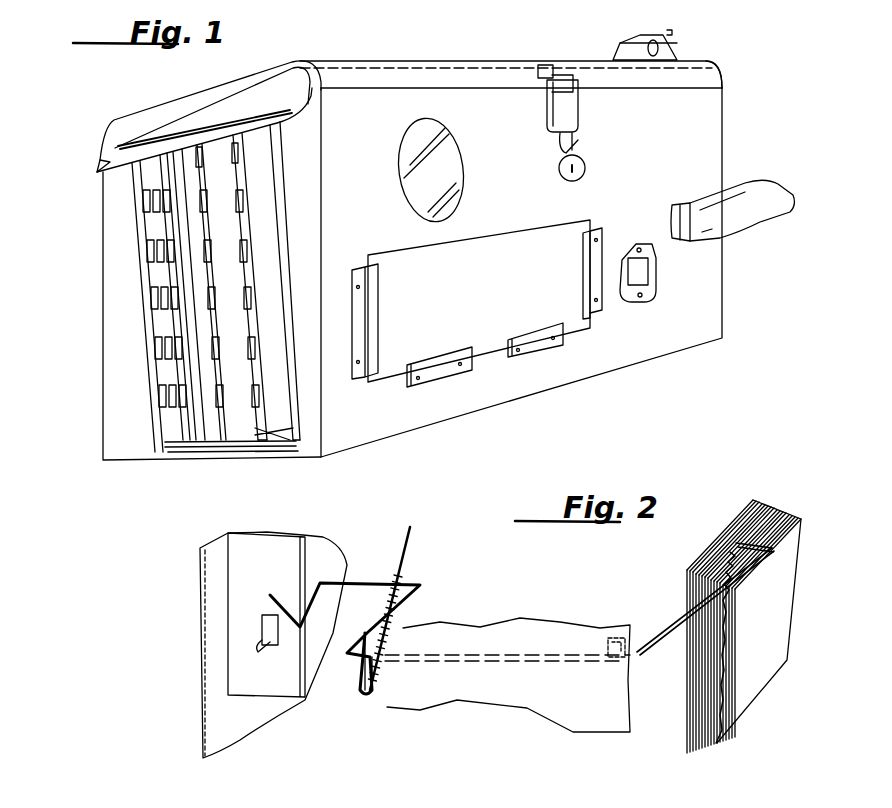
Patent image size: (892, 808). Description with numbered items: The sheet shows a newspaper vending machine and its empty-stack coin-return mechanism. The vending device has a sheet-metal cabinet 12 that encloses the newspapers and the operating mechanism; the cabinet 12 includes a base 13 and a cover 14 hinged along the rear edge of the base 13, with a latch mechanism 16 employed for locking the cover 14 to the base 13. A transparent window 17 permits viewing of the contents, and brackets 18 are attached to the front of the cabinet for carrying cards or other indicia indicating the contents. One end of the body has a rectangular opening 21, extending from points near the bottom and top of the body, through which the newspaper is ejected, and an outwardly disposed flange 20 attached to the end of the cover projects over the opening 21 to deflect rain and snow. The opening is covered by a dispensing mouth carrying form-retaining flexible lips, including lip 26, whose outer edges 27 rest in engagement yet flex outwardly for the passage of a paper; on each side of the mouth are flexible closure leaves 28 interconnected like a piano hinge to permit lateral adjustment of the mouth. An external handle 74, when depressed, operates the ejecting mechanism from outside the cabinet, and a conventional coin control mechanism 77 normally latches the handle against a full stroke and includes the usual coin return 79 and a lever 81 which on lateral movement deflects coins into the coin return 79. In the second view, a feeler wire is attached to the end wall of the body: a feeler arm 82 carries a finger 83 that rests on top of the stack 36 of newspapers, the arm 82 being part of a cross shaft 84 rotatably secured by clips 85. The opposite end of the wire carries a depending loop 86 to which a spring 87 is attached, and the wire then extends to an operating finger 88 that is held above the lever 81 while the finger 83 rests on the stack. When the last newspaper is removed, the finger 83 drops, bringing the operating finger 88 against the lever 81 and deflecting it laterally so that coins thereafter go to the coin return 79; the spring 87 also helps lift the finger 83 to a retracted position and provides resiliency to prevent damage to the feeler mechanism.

In FIG. 1, the cabinet 12 is at (748, 78).
In FIG. 1, the base 13 is at (722, 150).
In FIG. 2, the base 13 is at (588, 720).
In FIG. 1, the cover 14 is at (703, 63).
In FIG. 1, the latch mechanism 16 is at (566, 112).
In FIG. 1, the transparent window 17 is at (413, 128).
In FIG. 1, the brackets 18 is at (562, 332).
In FIG. 1, the outwardly disposed flange 20 is at (100, 166).
In FIG. 1, the rectangular opening 21 is at (157, 405).
In FIG. 1, the flexible lip 26 is at (212, 433).
In FIG. 1, the outer edges 27 is at (217, 430).
In FIG. 1, the leaves 28 is at (270, 427).
In FIG. 1, the external handle 74 is at (778, 208).
In FIG. 1, the coin return 79 is at (645, 278).
In FIG. 2, the stack of newspapers 36 is at (745, 524).
In FIG. 2, the coin control mechanism 77 is at (322, 552).
In FIG. 2, the lever 81 is at (266, 652).
In FIG. 2, the feeler arm 82 is at (665, 617).
In FIG. 2, the finger 83 is at (778, 552).
In FIG. 2, the cross shaft 84 is at (475, 658).
In FIG. 2, the clips 85 is at (615, 637).
In FIG. 2, the depending loop 86 is at (368, 695).
In FIG. 2, the spring 87 is at (393, 600).
In FIG. 2, the operating finger 88 is at (271, 596).